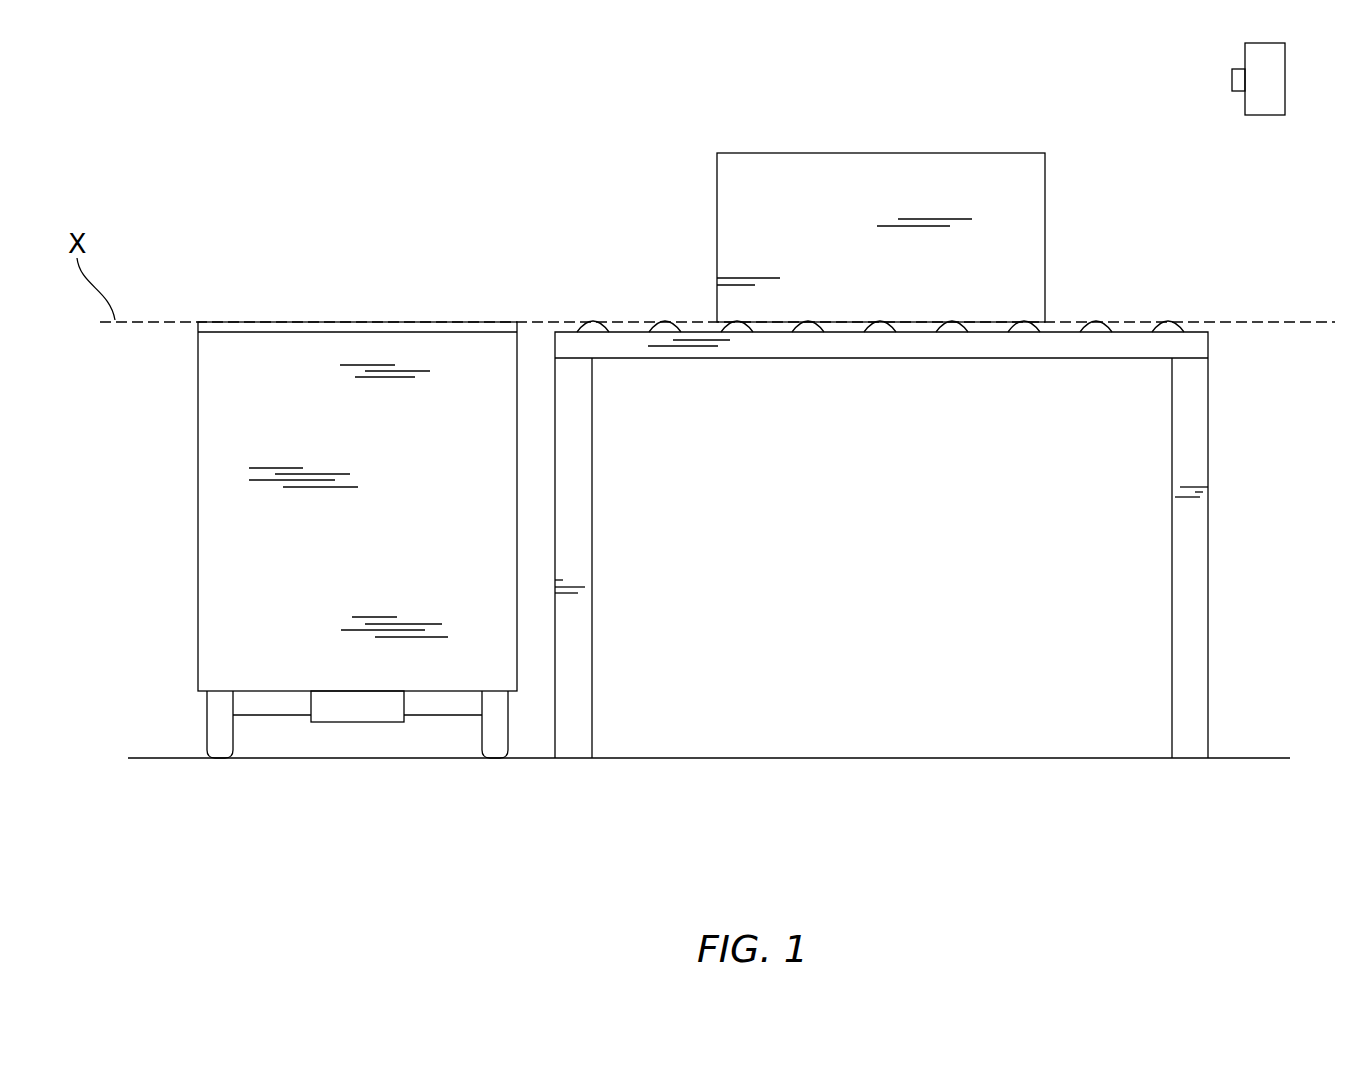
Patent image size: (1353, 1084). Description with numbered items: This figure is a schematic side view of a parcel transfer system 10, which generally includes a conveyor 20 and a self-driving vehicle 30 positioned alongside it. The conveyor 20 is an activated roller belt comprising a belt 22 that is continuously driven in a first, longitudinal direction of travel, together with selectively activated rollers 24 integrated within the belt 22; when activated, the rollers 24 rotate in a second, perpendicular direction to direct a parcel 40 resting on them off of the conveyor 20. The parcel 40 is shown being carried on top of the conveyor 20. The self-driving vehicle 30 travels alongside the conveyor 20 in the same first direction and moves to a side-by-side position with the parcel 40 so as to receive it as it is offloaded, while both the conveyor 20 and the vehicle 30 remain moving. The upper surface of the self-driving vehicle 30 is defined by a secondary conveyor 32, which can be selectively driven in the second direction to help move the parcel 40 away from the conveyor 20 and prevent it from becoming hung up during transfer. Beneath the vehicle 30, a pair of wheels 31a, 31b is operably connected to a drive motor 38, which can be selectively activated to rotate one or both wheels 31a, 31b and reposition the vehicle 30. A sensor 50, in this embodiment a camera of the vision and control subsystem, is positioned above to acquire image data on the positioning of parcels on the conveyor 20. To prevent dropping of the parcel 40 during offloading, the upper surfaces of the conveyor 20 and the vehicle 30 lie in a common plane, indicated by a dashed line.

The parcel transfer system 10 is at (227, 74).
The conveyor 20 is at (1210, 436).
The belt 22 is at (620, 332).
The selectively activated rollers 24 is at (1032, 327).
The self-driving vehicle 30 is at (198, 462).
The wheel 31a is at (222, 743).
The wheel 31b is at (495, 745).
The secondary conveyor 32 is at (240, 320).
The drive motor 38 is at (336, 706).
The parcel 40 is at (855, 175).
The sensor 50 is at (1260, 116).